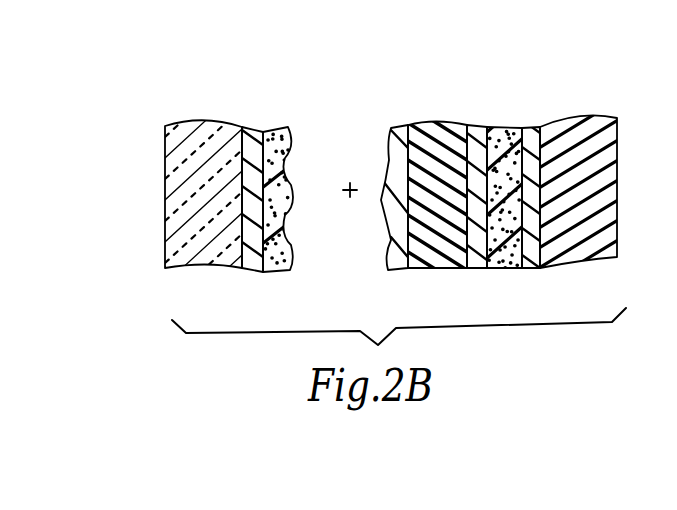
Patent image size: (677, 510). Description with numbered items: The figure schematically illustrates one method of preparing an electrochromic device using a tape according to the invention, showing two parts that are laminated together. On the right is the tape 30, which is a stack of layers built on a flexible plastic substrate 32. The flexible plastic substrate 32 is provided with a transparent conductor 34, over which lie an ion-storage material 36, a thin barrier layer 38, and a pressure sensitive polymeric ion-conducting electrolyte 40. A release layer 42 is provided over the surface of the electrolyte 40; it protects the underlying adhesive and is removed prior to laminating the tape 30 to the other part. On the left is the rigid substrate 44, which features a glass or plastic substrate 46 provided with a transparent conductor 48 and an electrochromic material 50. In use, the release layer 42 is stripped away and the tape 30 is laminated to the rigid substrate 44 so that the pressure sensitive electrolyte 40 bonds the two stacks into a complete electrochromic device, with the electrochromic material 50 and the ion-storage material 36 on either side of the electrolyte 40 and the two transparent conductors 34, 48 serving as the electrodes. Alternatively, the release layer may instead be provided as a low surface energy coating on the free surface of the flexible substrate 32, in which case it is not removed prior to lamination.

The tape 30 is at (600, 87).
The flexible plastic substrate 32 is at (580, 250).
The transparent conductor 34 is at (528, 128).
The ion-storage material 36 is at (500, 258).
The thin barrier layer 38 is at (476, 125).
The pressure sensitive polymeric ion-conducting electrolyte 40 is at (428, 123).
The release layer 42 is at (389, 132).
The rigid substrate 44 is at (188, 66).
The glass or plastic substrate 46 is at (180, 128).
The transparent conductor 48 is at (252, 128).
The electrochromic material 50 is at (280, 128).